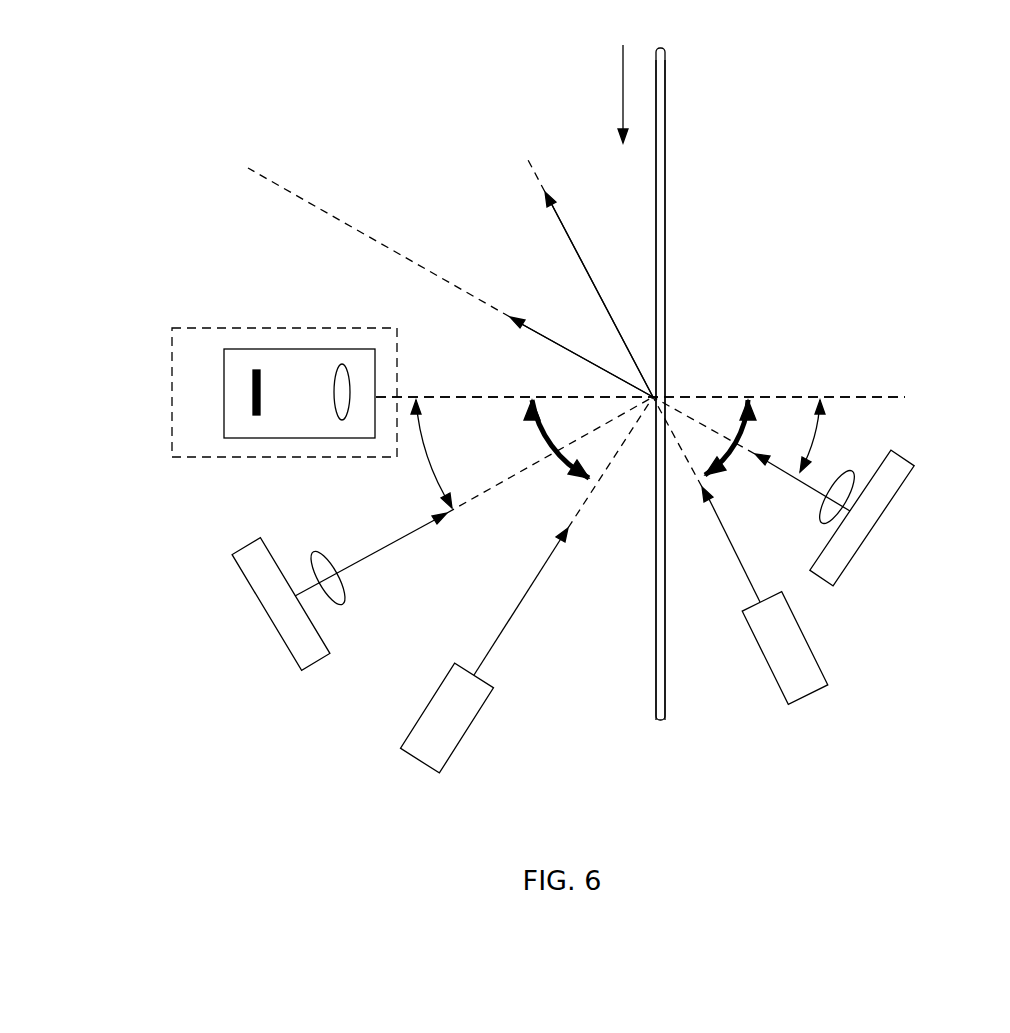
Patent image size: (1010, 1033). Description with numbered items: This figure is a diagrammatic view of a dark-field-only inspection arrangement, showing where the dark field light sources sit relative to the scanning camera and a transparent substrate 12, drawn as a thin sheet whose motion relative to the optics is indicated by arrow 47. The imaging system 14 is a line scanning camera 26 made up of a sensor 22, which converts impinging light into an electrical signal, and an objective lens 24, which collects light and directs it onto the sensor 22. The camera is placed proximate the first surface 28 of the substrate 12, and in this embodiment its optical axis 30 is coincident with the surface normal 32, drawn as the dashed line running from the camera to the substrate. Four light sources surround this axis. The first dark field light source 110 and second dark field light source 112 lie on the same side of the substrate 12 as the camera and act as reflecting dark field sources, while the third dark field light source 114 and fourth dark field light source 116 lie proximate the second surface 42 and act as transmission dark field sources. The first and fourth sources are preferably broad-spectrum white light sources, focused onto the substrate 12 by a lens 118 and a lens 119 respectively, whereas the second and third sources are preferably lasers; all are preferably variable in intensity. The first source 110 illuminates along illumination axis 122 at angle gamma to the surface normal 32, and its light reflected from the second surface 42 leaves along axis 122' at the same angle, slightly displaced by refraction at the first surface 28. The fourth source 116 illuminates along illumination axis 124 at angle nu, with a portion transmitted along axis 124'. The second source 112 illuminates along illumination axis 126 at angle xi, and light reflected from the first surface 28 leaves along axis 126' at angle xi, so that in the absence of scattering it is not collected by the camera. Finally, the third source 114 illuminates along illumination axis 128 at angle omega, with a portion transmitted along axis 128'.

The substrate 12 is at (678, 117).
The imaging system 14 is at (160, 355).
The sensor 22 is at (252, 393).
The objective lens 24 is at (338, 403).
The line scanning camera 26 is at (305, 338).
The first surface 28 is at (657, 672).
The optical axis 30 is at (487, 397).
The surface normal 32 is at (640, 367).
The second surface 42 is at (667, 218).
The arrow 47 is at (623, 100).
The first dark field light source 110 is at (240, 576).
The second dark field light source 112 is at (413, 727).
The third dark field light source 114 is at (818, 645).
The fourth dark field light source 116 is at (897, 497).
The lens 118 is at (347, 600).
The lens 119 is at (788, 527).
The illumination axis 122 is at (474, 509).
The illumination axis 124 is at (751, 480).
The illumination axis 126 is at (563, 539).
The illumination axis 128 is at (706, 513).
The reflected axis 122' is at (450, 282).
The transmitted axis 124' is at (537, 318).
The reflected axis 126' is at (501, 263).
The transmitted axis 128' is at (501, 263).